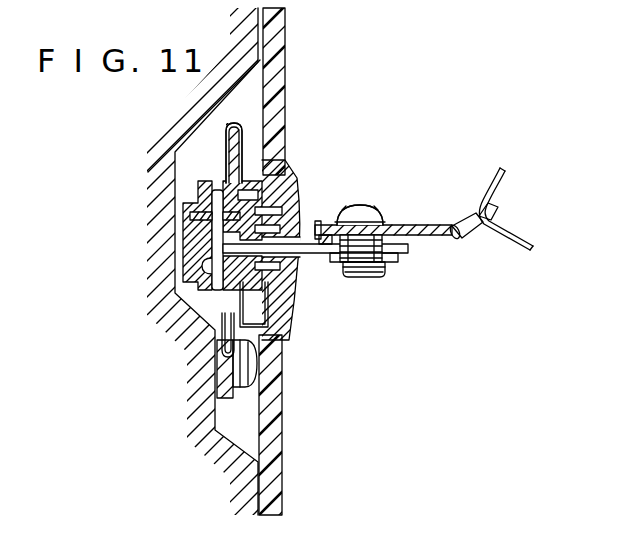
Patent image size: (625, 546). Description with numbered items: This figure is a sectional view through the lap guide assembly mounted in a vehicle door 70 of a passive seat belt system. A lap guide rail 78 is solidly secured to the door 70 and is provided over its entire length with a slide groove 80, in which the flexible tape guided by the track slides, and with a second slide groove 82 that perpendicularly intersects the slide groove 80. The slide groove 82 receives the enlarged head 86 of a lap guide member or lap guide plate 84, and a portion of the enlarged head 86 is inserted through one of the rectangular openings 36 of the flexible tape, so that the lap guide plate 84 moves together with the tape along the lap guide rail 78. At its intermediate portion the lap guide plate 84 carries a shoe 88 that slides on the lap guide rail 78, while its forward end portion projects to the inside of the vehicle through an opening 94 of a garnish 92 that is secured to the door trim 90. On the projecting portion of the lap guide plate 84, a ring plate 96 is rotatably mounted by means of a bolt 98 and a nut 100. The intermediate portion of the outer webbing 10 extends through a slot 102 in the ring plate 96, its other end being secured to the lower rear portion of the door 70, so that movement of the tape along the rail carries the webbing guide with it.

The outer webbing 10 is at (517, 232).
The rectangular opening 36 is at (230, 170).
The door 70 is at (284, 488).
The lap guide rail 78 is at (286, 193).
The slide groove 80 is at (200, 220).
The slide groove 82 is at (205, 262).
The lap guide plate 84 is at (314, 254).
The enlarged head 86 is at (222, 246).
The shoe 88 is at (258, 268).
The door trim 90 is at (287, 92).
The garnish 92 is at (293, 160).
The opening 94 is at (296, 264).
The ring plate 96 is at (437, 233).
The bolt 98 is at (372, 207).
The nut 100 is at (400, 258).
The slot 102 is at (480, 230).